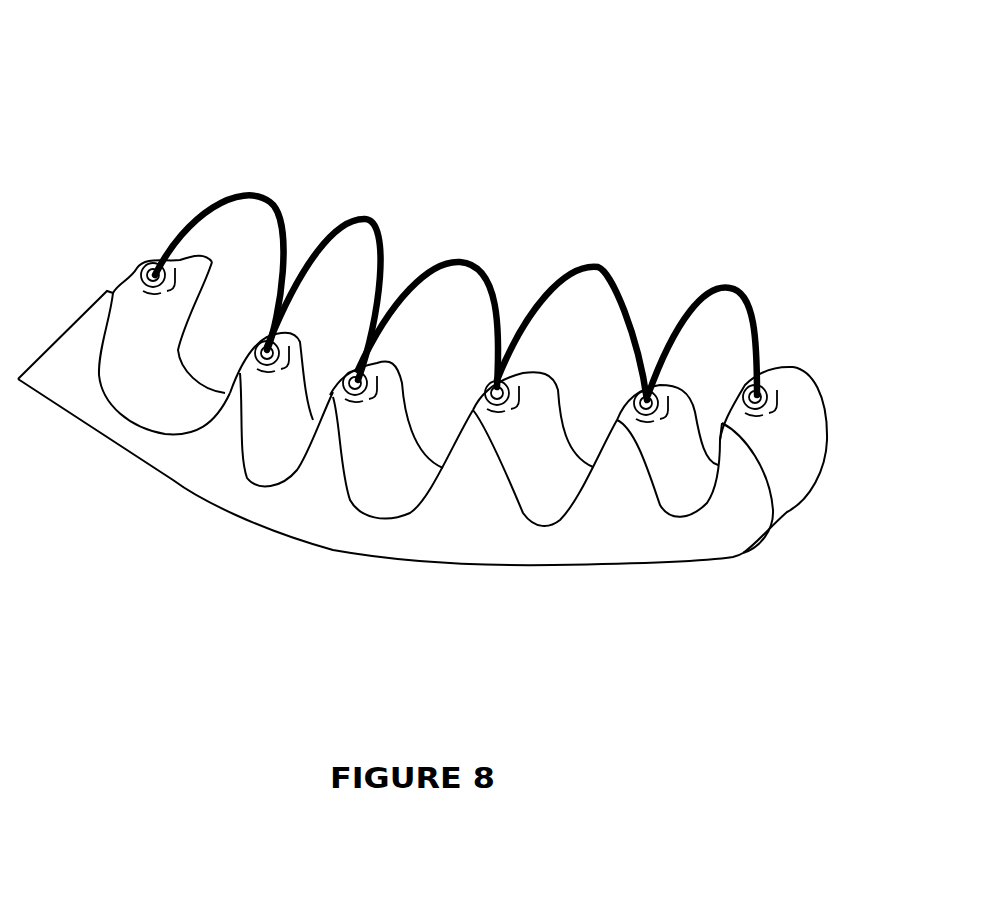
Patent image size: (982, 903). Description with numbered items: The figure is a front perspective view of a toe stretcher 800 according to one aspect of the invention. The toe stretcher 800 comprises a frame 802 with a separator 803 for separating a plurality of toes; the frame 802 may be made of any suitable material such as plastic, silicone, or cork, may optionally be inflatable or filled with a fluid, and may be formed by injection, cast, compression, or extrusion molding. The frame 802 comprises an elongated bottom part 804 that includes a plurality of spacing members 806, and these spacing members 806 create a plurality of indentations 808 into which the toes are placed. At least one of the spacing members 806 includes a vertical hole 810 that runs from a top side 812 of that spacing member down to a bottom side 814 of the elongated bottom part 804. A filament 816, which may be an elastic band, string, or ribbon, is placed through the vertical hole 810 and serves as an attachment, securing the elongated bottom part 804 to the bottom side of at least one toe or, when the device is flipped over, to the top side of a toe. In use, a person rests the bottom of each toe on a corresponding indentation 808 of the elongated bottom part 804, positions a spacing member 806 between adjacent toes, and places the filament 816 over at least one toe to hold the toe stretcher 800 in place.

The toe stretcher 800 is at (581, 132).
The frame 802 is at (826, 548).
The separator 803 is at (468, 470).
The elongated bottom part 804 is at (719, 525).
The spacing members 806 is at (330, 390).
The indentations 808 is at (163, 407).
The vertical hole 810 is at (148, 262).
The top side 812 is at (681, 378).
The bottom side 814 is at (663, 567).
The filament 816 is at (753, 312).